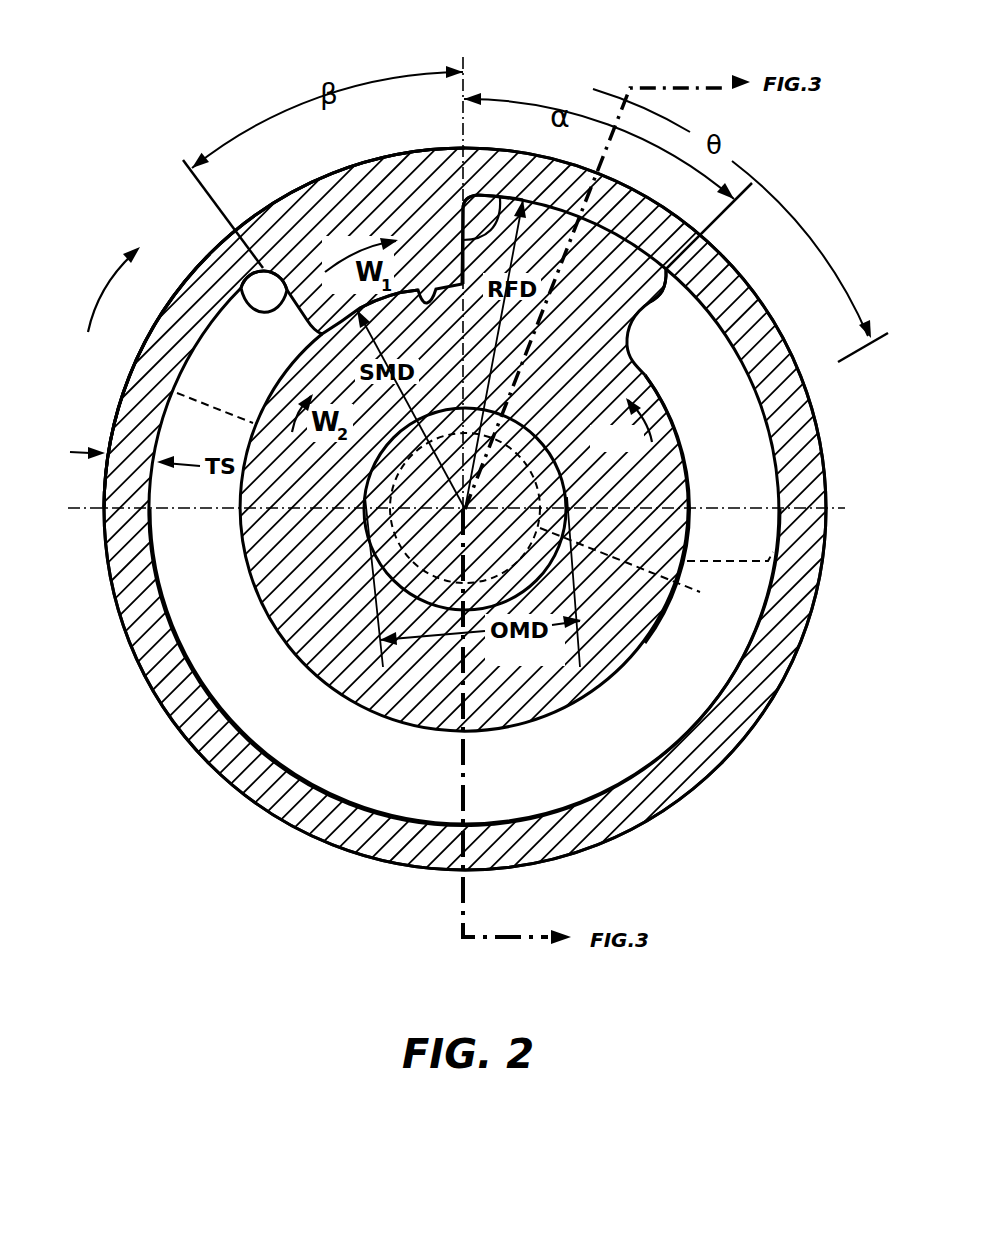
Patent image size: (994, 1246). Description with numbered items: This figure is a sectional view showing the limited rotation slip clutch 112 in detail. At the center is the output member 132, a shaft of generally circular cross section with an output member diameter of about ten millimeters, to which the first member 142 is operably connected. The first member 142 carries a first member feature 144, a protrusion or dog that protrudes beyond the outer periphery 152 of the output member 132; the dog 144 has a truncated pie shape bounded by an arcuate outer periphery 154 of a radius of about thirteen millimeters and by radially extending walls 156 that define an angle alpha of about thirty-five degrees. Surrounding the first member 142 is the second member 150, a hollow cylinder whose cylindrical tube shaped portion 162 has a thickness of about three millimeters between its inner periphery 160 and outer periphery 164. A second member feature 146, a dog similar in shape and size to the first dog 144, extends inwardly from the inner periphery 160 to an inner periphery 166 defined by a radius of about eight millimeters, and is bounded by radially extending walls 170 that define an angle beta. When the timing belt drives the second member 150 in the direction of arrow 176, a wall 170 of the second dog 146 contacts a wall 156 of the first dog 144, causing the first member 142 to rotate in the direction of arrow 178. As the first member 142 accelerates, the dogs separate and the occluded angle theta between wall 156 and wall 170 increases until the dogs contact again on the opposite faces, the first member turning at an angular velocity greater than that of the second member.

The clutch 112 is at (128, 68).
The output member 132 is at (475, 502).
The first member 142 is at (293, 562).
The first member feature 144 is at (648, 270).
The second member feature 146 is at (319, 232).
The second member 150 is at (147, 638).
The outer periphery 152 is at (688, 449).
The arcuate outer periphery 154 is at (496, 196).
The radially extending walls 156 is at (277, 275).
The inner periphery 160 is at (160, 598).
The cylindrical tube shaped portion 162 is at (335, 835).
The outer periphery 164 is at (117, 410).
The inner periphery 166 is at (425, 232).
The radially extending walls 170 is at (242, 289).
The arrow 176 is at (115, 277).
The arrow 178 is at (624, 425).